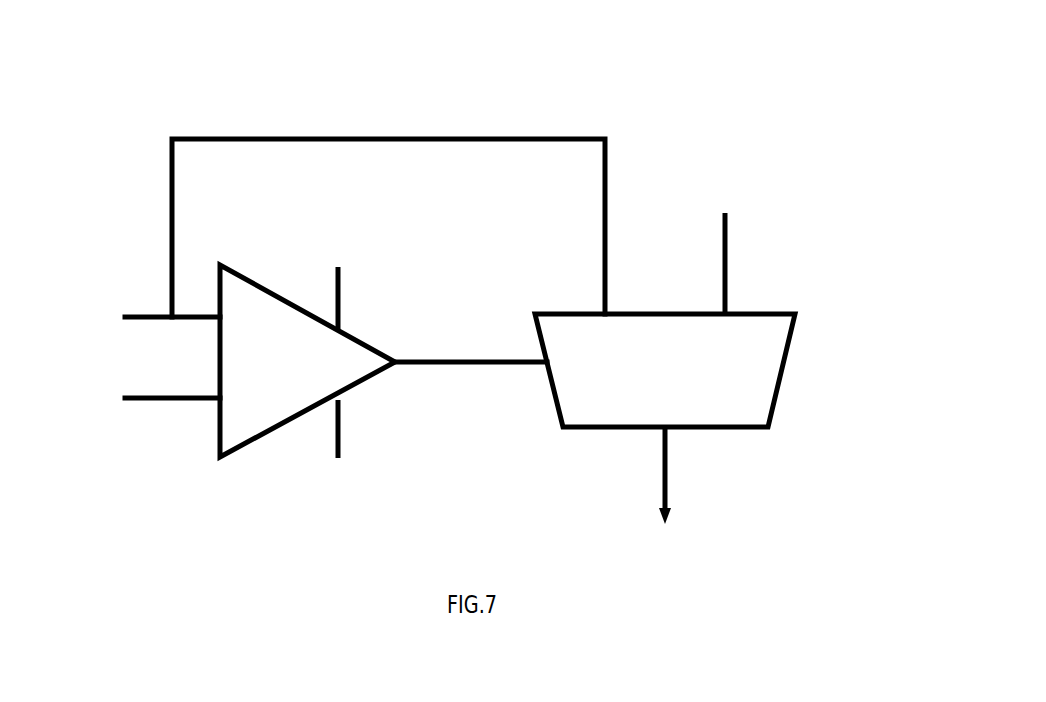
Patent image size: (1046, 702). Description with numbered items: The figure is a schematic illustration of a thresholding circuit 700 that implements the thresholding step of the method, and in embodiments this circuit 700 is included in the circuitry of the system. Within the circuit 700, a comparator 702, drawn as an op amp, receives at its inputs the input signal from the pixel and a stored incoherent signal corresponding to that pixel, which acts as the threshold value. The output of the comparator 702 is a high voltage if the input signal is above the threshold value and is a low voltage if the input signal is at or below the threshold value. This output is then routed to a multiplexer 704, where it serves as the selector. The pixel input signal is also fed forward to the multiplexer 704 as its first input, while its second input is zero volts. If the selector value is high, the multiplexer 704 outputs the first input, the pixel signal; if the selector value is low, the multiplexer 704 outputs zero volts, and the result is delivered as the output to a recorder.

The thresholding circuit 700 is at (500, 287).
The comparator 702 is at (220, 438).
The multiplexer 704 is at (777, 312).